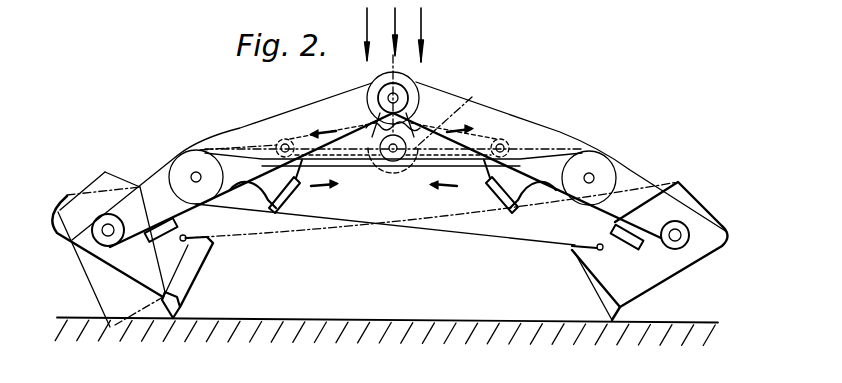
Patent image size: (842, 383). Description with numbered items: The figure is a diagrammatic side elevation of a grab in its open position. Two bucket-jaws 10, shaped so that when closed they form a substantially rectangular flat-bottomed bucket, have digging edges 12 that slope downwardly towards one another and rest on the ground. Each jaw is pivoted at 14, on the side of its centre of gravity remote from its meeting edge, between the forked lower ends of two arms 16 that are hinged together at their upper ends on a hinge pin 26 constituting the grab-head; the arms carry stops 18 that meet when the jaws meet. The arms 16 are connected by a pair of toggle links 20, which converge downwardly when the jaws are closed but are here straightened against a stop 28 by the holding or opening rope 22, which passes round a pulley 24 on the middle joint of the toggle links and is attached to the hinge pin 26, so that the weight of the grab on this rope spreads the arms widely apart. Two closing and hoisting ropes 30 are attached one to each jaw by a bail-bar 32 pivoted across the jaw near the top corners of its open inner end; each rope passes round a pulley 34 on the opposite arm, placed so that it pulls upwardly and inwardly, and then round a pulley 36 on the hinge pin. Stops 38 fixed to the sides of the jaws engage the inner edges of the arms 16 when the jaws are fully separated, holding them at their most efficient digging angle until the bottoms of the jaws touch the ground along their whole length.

The bucket-jaw 10 is at (137, 265).
The digging edge 12 is at (180, 316).
The pivot 14 is at (108, 226).
The arm 16 is at (296, 117).
The stop 18 is at (300, 183).
The toggle link 20 is at (353, 150).
The holding rope 22 is at (395, 31).
The pulley 24 is at (431, 79).
The hinge pin 26 is at (373, 83).
The stop 28 is at (380, 123).
The closing rope 30 is at (330, 227).
The bail-bar 32 is at (197, 237).
The pulley 34 is at (184, 174).
The pulley 36 is at (406, 78).
The stop 38 is at (205, 244).